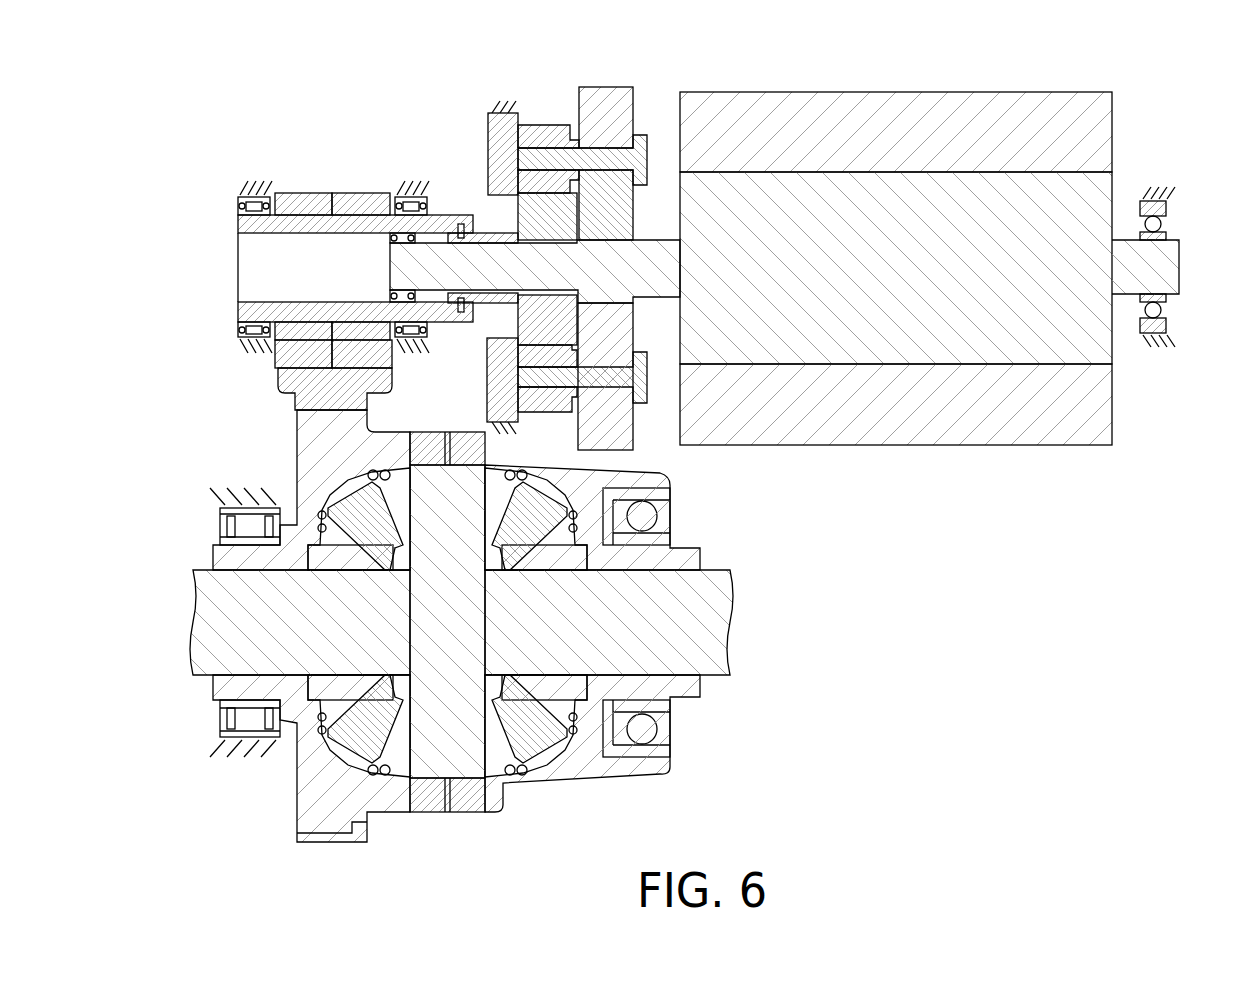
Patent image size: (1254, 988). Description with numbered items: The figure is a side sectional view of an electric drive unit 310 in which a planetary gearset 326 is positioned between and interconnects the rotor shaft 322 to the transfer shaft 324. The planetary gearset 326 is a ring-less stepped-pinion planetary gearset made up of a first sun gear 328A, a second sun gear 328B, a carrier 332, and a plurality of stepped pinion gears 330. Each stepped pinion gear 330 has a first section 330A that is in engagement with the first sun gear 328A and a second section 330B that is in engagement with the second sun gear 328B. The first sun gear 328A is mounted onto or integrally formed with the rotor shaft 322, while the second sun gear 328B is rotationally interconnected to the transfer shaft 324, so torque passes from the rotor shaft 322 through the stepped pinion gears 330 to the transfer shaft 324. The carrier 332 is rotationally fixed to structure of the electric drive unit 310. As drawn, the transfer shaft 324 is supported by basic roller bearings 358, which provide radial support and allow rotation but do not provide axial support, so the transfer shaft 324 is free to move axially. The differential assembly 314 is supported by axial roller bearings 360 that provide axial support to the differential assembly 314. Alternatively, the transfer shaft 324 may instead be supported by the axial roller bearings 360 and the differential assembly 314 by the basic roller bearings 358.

The electric drive unit 310 is at (923, 680).
The differential assembly 314 is at (508, 807).
The rotor shaft 322 is at (633, 268).
The transfer shaft 324 is at (257, 225).
The planetary gearset 326 is at (652, 138).
The first sun gear 328A is at (602, 238).
The second sun gear 328B is at (545, 205).
The stepped pinion gears 330 is at (600, 148).
The first section 330A is at (607, 87).
The second section 330B is at (545, 125).
The carrier 332 is at (508, 125).
The basic roller bearings 358 is at (408, 205).
The axial roller bearings 360 is at (1160, 224).